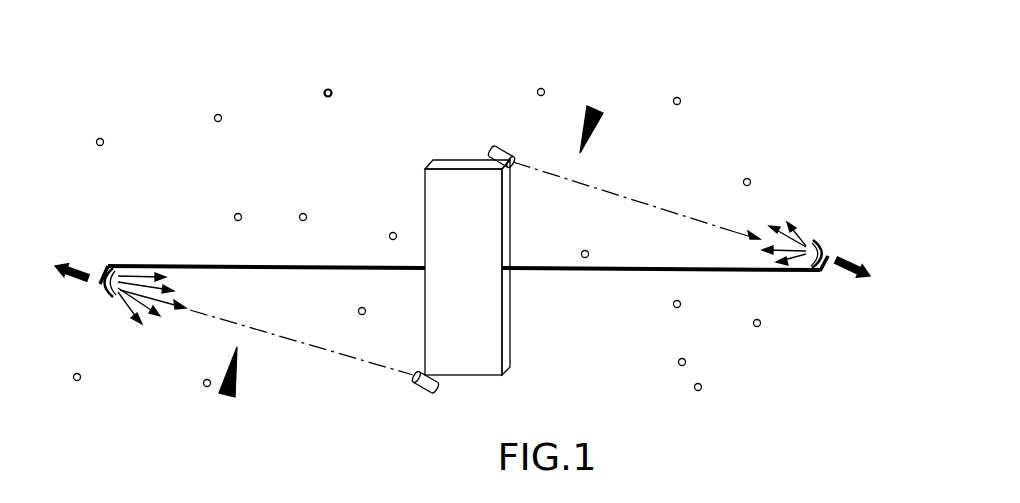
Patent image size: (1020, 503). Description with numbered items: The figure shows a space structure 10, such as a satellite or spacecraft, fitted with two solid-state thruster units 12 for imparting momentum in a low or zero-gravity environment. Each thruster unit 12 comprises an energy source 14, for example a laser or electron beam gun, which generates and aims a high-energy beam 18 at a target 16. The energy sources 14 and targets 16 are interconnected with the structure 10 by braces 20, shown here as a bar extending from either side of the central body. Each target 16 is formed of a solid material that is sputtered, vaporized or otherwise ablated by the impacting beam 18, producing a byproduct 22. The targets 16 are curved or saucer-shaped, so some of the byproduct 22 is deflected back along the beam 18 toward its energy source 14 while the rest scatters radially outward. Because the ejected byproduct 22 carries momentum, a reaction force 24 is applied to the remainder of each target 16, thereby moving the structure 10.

The space structure 10 is at (425, 203).
The solid-state thruster unit 12 is at (597, 108).
The energy source 14 is at (498, 150).
The target 16 is at (106, 292).
The high-energy beam 18 is at (694, 215).
The brace 20 is at (249, 265).
The byproduct 22 is at (780, 218).
The reaction force 24 is at (71, 262).